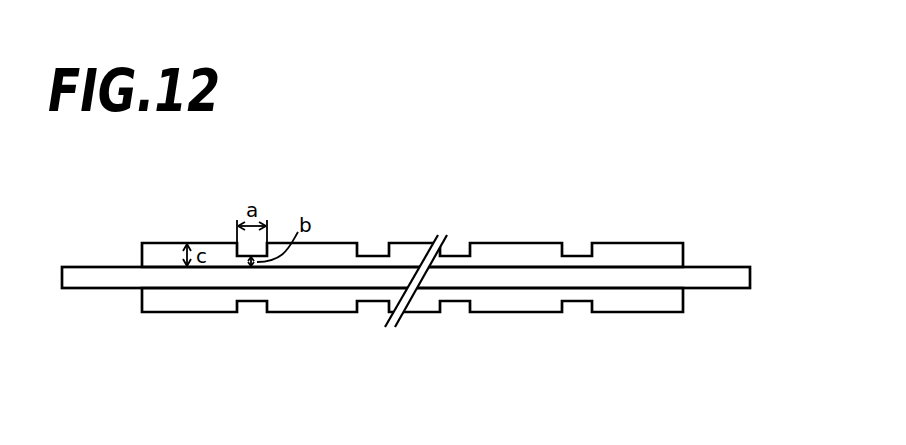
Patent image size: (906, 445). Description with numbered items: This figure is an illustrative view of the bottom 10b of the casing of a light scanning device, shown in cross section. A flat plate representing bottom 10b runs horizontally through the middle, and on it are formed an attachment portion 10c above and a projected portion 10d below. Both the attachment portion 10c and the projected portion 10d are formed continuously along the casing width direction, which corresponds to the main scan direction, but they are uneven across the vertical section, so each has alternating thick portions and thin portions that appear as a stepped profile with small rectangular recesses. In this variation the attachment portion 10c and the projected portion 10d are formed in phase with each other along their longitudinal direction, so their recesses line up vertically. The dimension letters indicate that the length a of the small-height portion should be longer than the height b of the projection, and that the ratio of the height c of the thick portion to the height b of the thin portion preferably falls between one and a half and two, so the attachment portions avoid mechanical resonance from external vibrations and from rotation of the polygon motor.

The bottom of casing 10b is at (722, 273).
The attachment portion 10c is at (653, 242).
The projected portion 10d is at (667, 308).